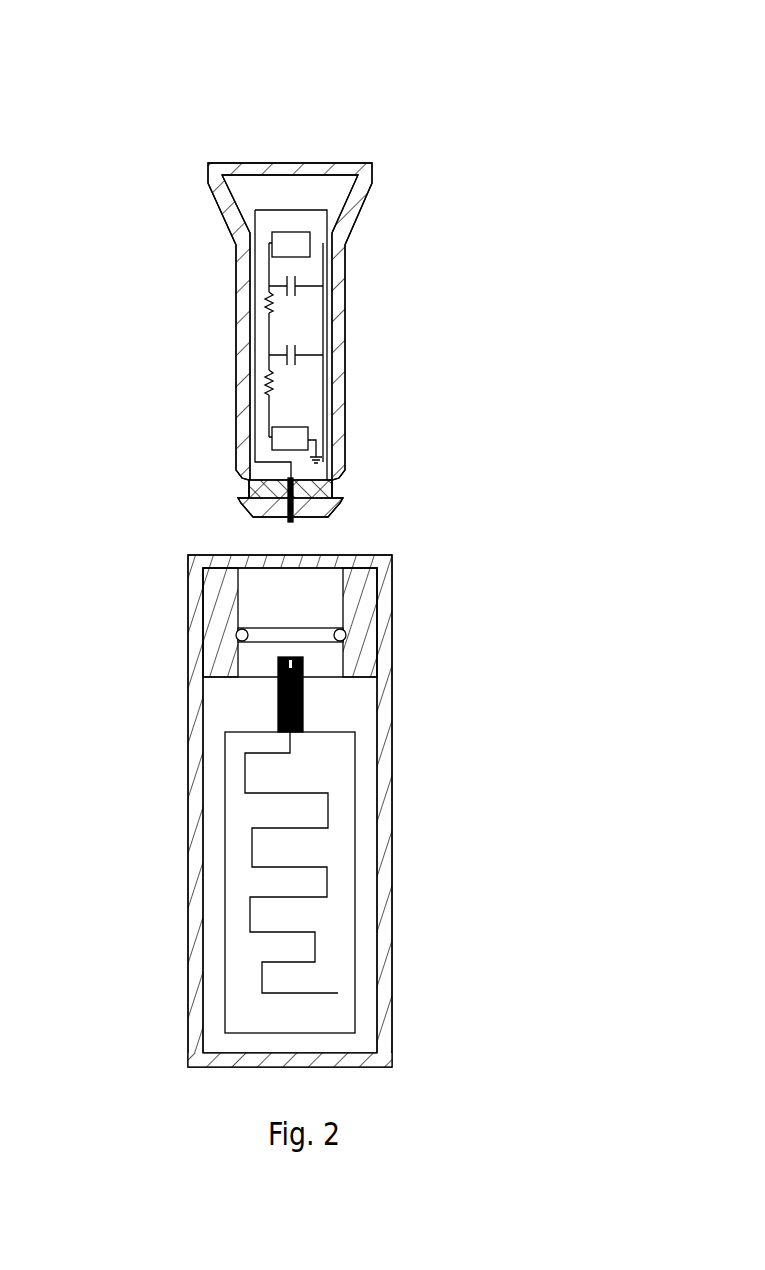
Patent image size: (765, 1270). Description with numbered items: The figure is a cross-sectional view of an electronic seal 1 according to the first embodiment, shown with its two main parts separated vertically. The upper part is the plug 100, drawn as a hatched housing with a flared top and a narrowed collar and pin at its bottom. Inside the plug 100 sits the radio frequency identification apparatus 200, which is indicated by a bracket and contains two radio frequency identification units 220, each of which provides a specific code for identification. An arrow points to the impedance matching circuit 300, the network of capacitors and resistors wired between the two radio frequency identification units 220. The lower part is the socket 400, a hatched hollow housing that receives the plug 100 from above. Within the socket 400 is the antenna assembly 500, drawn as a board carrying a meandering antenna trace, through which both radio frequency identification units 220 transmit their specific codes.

The electronic seal 1 is at (447, 92).
The plug 100 is at (238, 283).
The radio frequency identification apparatus 200 is at (447, 221).
The radio frequency identification unit 220 is at (305, 248).
The impedance matching circuit 300 is at (252, 359).
The socket 400 is at (393, 868).
The antenna assembly 500 is at (240, 810).